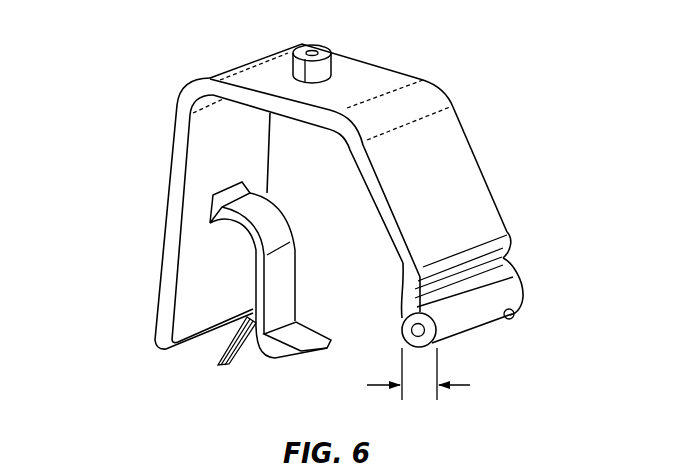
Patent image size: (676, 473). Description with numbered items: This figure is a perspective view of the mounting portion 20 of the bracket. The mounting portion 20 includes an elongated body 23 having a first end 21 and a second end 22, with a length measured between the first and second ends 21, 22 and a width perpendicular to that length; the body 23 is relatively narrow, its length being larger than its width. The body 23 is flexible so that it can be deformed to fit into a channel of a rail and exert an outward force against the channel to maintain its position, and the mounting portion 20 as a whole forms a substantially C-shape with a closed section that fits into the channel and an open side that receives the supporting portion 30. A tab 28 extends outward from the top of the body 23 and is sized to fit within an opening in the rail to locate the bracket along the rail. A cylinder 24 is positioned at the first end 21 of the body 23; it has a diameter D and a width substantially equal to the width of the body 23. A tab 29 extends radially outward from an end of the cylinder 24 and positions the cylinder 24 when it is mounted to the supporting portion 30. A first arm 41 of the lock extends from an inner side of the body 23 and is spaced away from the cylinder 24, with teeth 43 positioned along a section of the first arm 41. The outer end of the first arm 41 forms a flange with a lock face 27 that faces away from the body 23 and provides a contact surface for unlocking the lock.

The mounting portion 20 is at (535, 109).
The first end 21 is at (458, 333).
The second end 22 is at (172, 352).
The body 23 is at (363, 75).
The cylinder 24 is at (494, 298).
The lock face 27 is at (273, 359).
The tab 28 is at (297, 55).
The tab 29 is at (512, 319).
The first arm 41 is at (258, 283).
The teeth 43 is at (218, 363).
The supporting portion 30 is at (610, 472).